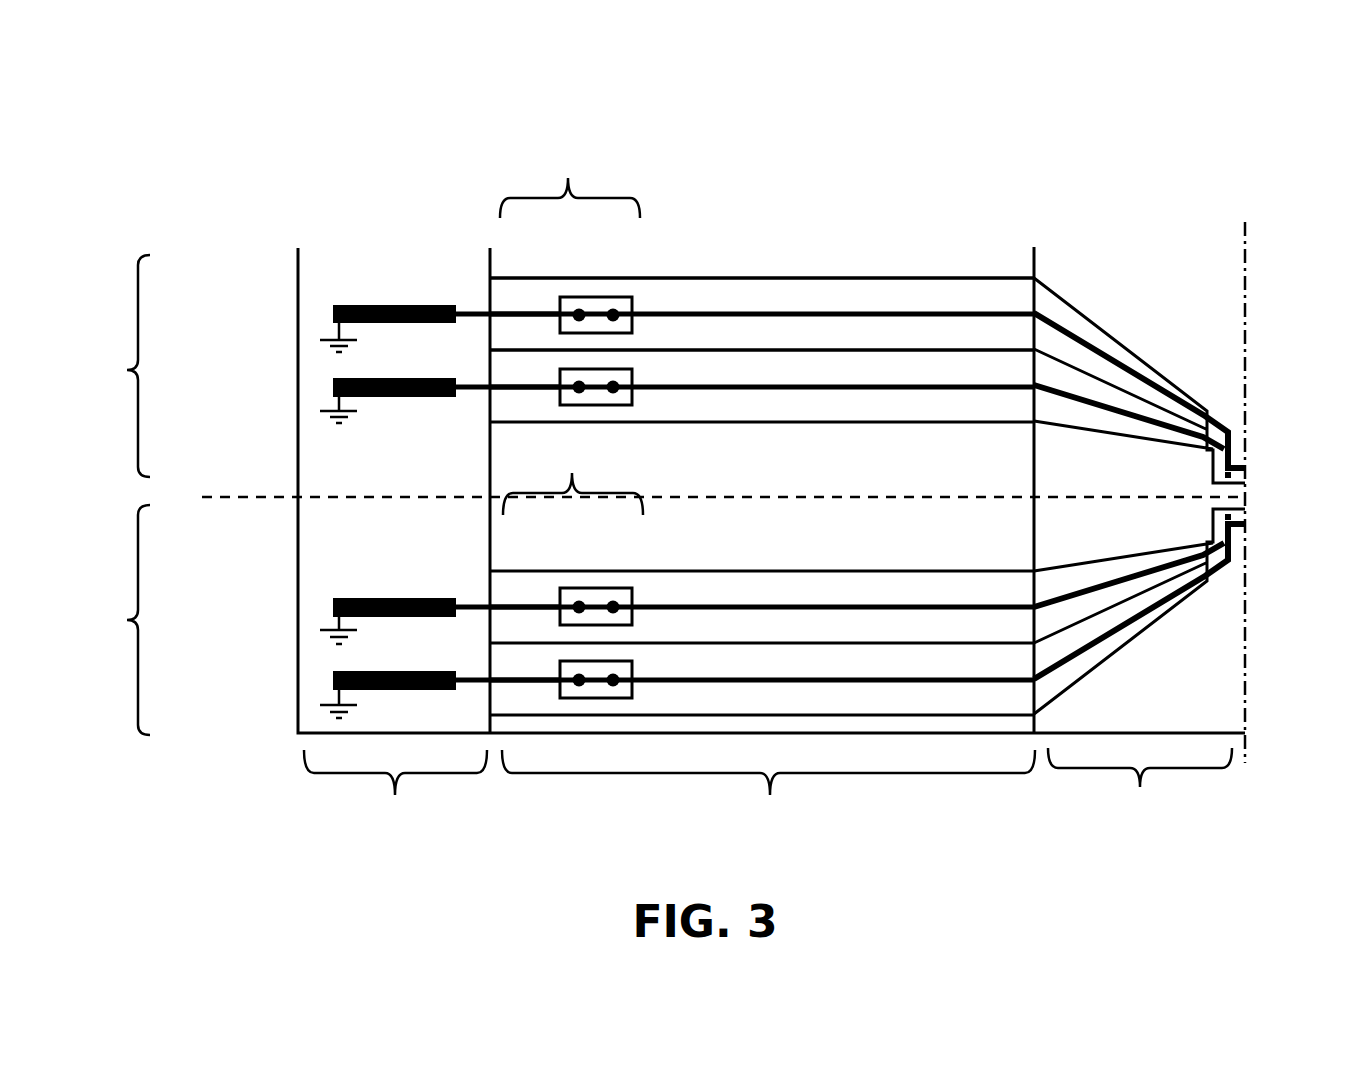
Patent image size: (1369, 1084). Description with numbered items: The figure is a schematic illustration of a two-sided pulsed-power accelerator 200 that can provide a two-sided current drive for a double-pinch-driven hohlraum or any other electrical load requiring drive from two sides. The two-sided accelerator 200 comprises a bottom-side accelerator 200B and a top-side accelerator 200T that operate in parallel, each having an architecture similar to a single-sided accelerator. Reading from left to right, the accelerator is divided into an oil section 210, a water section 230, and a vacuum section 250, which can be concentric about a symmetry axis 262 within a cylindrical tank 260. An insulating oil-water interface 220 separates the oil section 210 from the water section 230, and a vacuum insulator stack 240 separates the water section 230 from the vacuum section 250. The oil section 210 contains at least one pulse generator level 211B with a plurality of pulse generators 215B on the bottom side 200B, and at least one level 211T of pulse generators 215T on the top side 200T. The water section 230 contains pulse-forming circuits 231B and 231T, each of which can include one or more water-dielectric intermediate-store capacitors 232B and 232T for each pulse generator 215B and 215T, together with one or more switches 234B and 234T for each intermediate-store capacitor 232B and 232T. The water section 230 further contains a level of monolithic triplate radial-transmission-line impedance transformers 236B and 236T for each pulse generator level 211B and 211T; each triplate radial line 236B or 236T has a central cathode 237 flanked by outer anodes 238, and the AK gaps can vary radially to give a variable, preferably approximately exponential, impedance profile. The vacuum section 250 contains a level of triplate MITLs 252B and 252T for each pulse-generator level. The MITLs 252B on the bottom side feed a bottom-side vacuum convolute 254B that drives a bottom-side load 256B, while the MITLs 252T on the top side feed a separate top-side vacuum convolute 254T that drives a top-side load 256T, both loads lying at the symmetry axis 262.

The two-sided accelerator 200 is at (452, 127).
The top-side accelerator 200T is at (101, 366).
The bottom-side accelerator 200B is at (101, 620).
The oil section 210 is at (395, 790).
The top-side pulse generator level 211T is at (283, 393).
The bottom-side pulse generator level 211B is at (285, 683).
The top-side pulse generators 215T is at (373, 377).
The bottom-side pulse generators 215B is at (373, 670).
The insulating oil-water interface 220 is at (488, 262).
The water section 230 is at (768, 790).
The top-side pulse-forming circuit 231T is at (570, 182).
The bottom-side pulse-forming circuit 231B is at (573, 478).
The top-side water-dielectric intermediate-store capacitor 232T is at (532, 292).
The bottom-side water-dielectric intermediate-store capacitor 232B is at (535, 585).
The top-side switch 234T is at (599, 296).
The bottom-side switch 234B is at (602, 587).
The top-side triplate radial-transmission-line impedance transformer 236T is at (858, 293).
The bottom-side triplate radial-transmission-line impedance transformer 236B is at (860, 590).
The cathode 237 is at (722, 311).
The outer anodes 238 is at (722, 273).
The vacuum insulator stack 240 is at (1030, 252).
The vacuum section 250 is at (1140, 787).
The top-side triplate MITLs 252T is at (1067, 317).
The bottom-side triplate MITLs 252B is at (1068, 670).
The top-side vacuum convolute 254T is at (1217, 413).
The bottom-side vacuum convolute 254B is at (1215, 577).
The top-side load 256T is at (1256, 468).
The bottom-side load 256B is at (1256, 521).
The cylindrical tank 260 is at (296, 252).
The symmetry axis 262 is at (1244, 323).